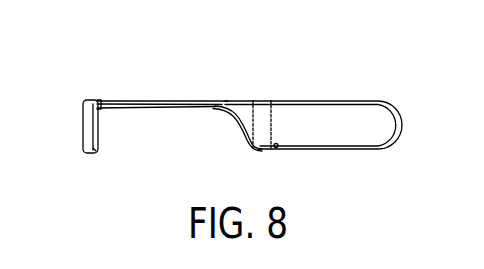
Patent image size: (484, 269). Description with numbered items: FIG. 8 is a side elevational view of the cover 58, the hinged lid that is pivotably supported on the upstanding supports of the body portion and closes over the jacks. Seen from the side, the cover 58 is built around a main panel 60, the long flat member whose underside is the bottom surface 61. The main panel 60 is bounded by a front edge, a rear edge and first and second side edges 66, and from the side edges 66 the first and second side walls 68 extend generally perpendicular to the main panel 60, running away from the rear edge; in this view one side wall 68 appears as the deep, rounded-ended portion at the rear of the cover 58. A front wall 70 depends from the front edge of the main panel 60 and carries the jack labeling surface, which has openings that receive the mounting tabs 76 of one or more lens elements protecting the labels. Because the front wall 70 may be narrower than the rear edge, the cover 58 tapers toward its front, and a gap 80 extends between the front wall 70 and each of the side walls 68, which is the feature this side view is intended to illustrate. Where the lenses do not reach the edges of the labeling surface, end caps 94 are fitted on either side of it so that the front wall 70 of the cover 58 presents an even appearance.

The cover 58 is at (234, 115).
The main panel 60 is at (178, 102).
The bottom surface 61 is at (188, 116).
The side edges 66 is at (215, 103).
The side walls 68 is at (386, 130).
The front wall 70 is at (97, 131).
The mounting tabs 76 is at (103, 108).
The gap 80 is at (153, 148).
The end caps 94 is at (85, 127).